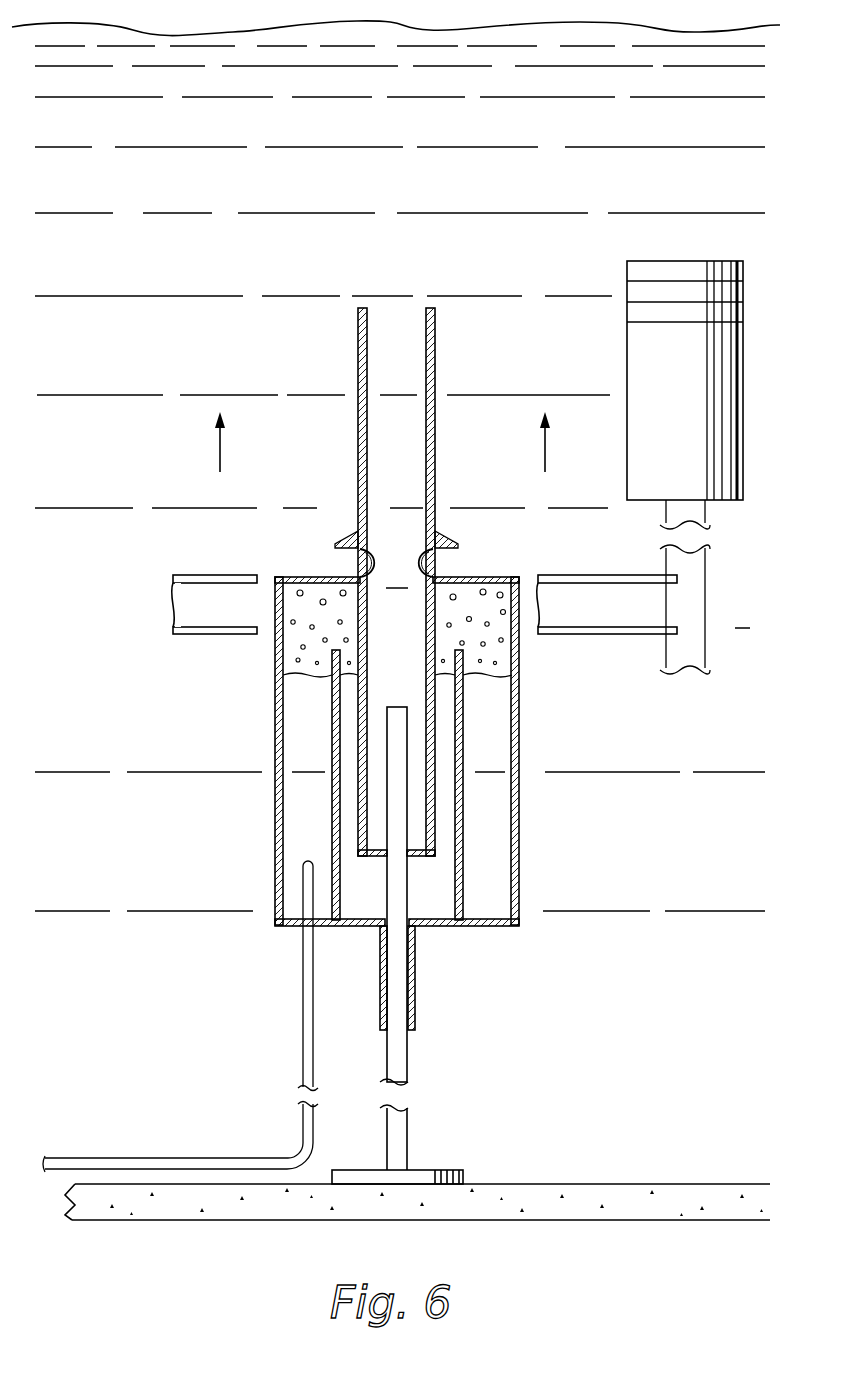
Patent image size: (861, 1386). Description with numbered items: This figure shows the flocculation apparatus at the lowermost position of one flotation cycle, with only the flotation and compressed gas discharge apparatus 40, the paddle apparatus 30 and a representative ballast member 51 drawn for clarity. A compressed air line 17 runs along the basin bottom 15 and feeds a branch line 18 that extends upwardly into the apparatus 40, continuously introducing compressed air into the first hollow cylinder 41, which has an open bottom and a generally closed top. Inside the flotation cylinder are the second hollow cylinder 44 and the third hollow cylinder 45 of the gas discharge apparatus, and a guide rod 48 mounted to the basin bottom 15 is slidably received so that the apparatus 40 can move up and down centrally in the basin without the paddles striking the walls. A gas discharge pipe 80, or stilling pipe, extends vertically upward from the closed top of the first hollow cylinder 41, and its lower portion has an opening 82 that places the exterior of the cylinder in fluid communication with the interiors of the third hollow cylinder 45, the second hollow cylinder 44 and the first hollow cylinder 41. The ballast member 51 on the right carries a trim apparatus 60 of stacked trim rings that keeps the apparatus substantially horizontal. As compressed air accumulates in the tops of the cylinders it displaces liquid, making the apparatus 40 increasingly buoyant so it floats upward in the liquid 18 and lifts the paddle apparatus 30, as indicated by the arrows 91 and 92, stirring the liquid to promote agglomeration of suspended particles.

The basin bottom 15 is at (630, 1183).
The compressed air line 17 is at (163, 1157).
The branch line 18 is at (360, 27).
The paddle apparatus 30 is at (221, 572).
The flotation and compressed gas discharge apparatus 40 is at (401, 746).
The first hollow cylinder 41 is at (520, 746).
The second hollow cylinder 44 is at (335, 727).
The third hollow cylinder 45 is at (362, 835).
The guide rod 48 is at (410, 1128).
The ballast member 51 is at (627, 358).
The trim apparatus 60 is at (628, 452).
The gas discharge pipe 80 is at (357, 437).
The opening 82 is at (430, 564).
The arrow 91 is at (555, 447).
The arrow 92 is at (218, 447).